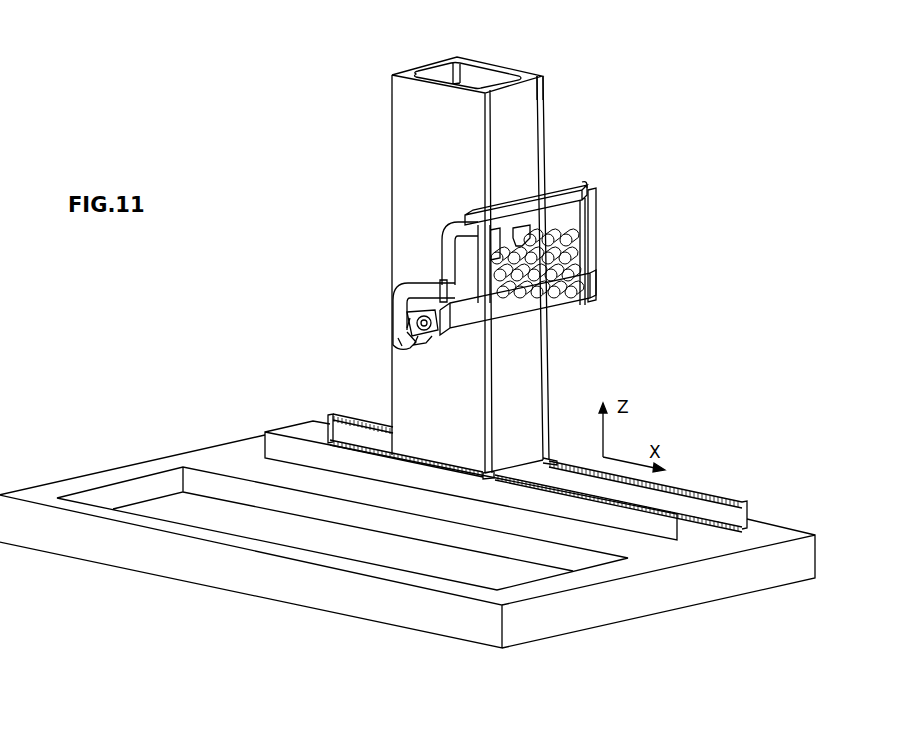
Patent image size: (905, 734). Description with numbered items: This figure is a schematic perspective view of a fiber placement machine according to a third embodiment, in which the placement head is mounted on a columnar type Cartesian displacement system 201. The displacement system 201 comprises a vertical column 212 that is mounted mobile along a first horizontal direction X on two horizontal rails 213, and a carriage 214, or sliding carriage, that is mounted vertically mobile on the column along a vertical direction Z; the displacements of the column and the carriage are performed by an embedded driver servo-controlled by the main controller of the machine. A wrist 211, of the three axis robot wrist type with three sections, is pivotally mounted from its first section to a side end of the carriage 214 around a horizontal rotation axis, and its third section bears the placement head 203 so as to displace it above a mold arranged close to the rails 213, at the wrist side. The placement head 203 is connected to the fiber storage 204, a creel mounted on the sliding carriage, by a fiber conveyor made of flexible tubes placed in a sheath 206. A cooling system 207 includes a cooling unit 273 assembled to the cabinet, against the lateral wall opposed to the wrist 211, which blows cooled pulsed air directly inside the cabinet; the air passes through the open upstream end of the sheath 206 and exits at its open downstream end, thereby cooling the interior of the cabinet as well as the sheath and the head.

The columnar type displacement system 201 is at (393, 148).
The vertical column 212 is at (537, 100).
The cooling unit 273 is at (589, 183).
The cooling system 207 is at (590, 199).
The fiber storage 204 is at (588, 250).
The carriage 214 is at (580, 292).
The sheath 206 is at (400, 292).
The wrist 211 is at (433, 337).
The placement head 203 is at (400, 351).
The horizontal rails 213 is at (722, 496).